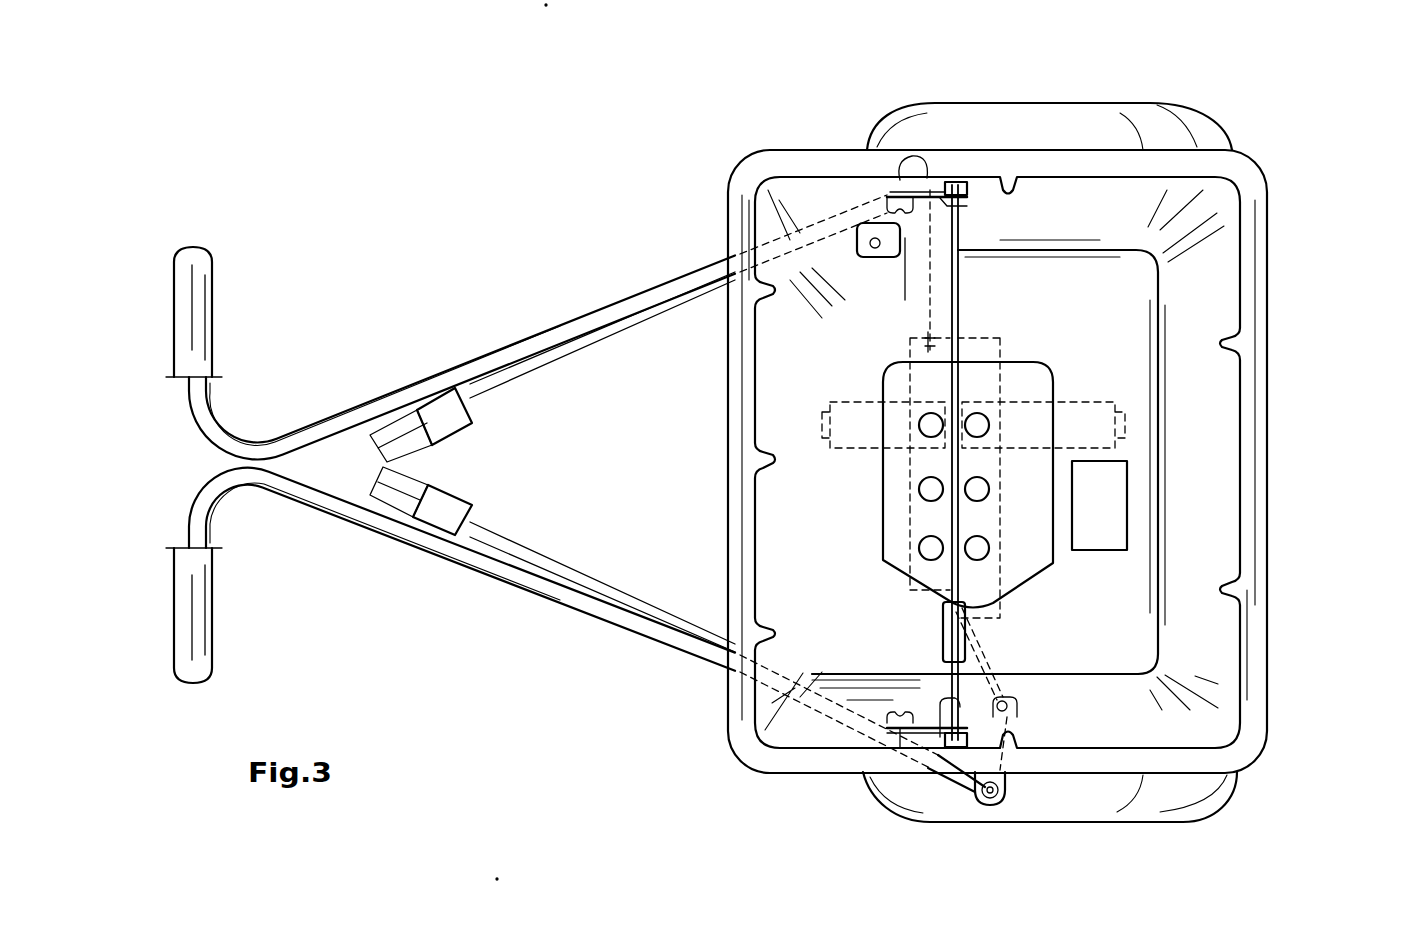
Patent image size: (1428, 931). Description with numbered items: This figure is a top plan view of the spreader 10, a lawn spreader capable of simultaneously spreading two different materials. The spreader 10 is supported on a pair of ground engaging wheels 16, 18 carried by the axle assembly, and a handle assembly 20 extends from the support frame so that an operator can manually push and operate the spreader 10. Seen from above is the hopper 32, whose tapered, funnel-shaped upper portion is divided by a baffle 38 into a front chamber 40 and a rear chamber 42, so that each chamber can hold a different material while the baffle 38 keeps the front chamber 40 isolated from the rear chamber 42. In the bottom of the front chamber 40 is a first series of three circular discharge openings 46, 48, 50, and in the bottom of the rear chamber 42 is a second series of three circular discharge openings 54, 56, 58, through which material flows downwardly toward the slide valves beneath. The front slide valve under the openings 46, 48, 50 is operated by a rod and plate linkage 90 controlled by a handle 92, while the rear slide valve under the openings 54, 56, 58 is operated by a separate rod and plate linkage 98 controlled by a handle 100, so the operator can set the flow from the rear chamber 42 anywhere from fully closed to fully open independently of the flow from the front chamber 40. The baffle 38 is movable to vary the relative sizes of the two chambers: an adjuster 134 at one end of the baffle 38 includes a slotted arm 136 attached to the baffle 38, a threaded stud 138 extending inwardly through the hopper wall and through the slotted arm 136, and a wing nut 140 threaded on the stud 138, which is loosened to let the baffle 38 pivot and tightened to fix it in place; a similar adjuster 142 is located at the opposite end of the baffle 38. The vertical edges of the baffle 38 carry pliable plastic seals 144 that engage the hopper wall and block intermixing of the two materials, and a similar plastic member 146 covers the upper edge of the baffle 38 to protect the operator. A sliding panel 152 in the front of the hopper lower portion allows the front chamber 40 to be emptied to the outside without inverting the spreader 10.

The spreader 10 is at (548, 183).
The ground engaging wheel 16 is at (948, 103).
The ground engaging wheel 18 is at (930, 822).
The handle assembly 20 is at (318, 424).
The hopper 32 is at (1268, 250).
The baffle 38 is at (958, 337).
The front chamber 40 is at (1075, 317).
The rear chamber 42 is at (840, 312).
The discharge opening 46 is at (977, 425).
The discharge opening 48 is at (977, 489).
The discharge opening 50 is at (977, 548).
The discharge opening 54 is at (931, 425).
The discharge opening 56 is at (931, 489).
The discharge opening 58 is at (931, 548).
The rod and plate linkage 90 is at (1008, 788).
The handle 92 is at (393, 497).
The rod and plate linkage 98 is at (960, 185).
The handle 100 is at (438, 413).
The adjuster 134 is at (883, 203).
The slotted arm 136 is at (940, 198).
The threaded stud 138 is at (888, 196).
The wing nut 140 is at (906, 245).
The adjuster 142 is at (873, 723).
The pliable plastic seal 144 is at (947, 190).
The plastic member 146 is at (965, 632).
The sliding panel 152 is at (1097, 477).